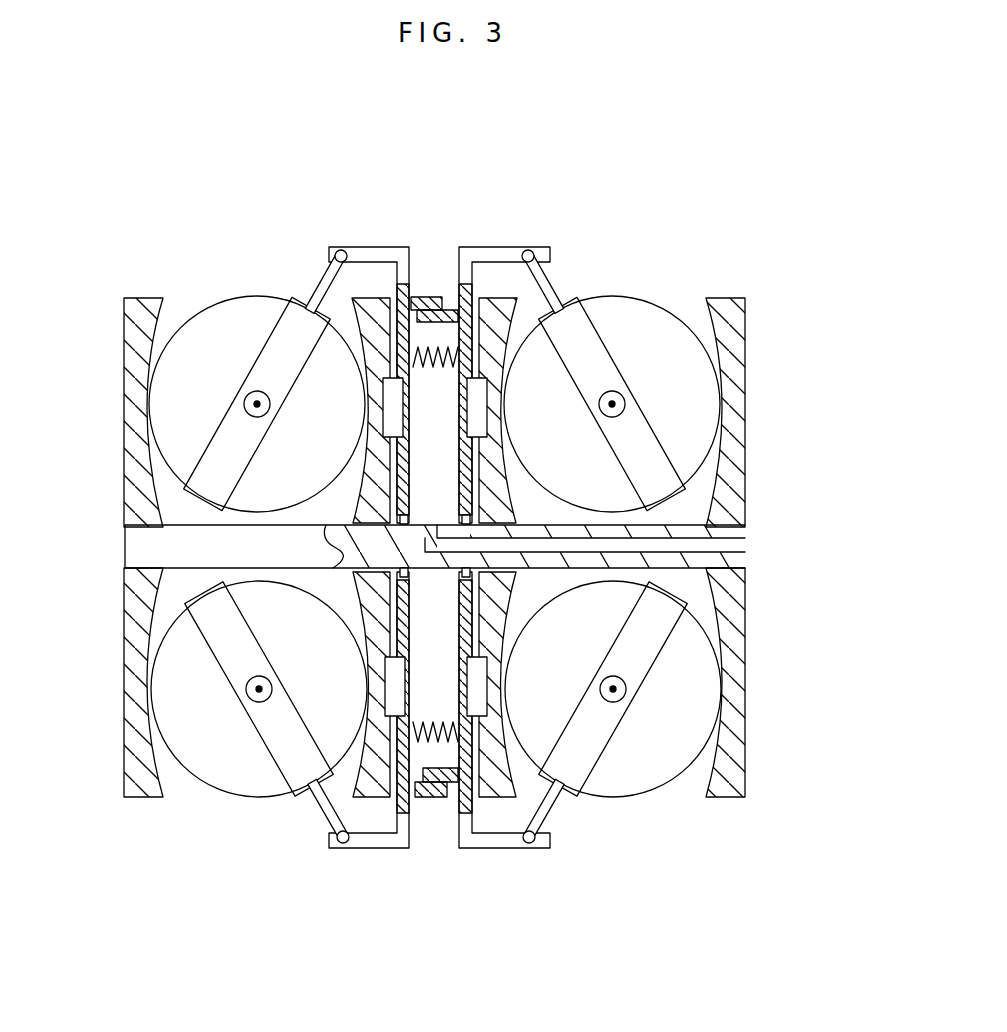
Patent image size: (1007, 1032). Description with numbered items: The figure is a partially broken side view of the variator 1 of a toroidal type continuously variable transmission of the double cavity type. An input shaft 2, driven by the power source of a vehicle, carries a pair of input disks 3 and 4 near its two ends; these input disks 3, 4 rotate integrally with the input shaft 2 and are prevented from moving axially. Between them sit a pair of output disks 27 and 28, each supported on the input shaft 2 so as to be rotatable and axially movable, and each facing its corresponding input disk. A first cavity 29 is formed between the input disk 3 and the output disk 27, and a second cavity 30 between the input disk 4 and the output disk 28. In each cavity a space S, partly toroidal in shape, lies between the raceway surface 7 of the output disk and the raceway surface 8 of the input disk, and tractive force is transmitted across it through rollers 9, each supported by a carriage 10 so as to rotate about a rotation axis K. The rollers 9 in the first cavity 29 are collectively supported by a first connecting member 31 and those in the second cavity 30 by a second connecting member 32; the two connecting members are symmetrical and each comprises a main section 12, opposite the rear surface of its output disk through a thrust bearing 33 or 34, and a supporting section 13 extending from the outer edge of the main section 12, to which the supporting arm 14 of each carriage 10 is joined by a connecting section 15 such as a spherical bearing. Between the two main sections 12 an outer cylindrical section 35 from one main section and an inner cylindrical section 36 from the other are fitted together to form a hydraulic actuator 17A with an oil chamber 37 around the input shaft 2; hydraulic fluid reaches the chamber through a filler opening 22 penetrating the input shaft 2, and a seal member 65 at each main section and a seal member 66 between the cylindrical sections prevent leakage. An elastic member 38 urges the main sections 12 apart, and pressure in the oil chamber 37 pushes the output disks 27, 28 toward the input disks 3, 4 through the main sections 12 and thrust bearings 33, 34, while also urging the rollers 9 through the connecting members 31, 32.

The variator 1 is at (688, 235).
The input shaft 2 is at (178, 575).
The input disk 3 is at (123, 342).
The input disk 4 is at (757, 342).
The raceway surface 7 is at (356, 345).
The raceway surface 8 is at (160, 342).
The roller 9 is at (220, 302).
The carriage 10 is at (256, 356).
The main section 12 is at (447, 265).
The supporting section 13 is at (365, 247).
The supporting arm 14 is at (318, 292).
The connecting section 15 is at (341, 250).
The hydraulic actuator 17A is at (426, 292).
The filler opening 22 is at (727, 546).
The output disk 27 is at (373, 812).
The output disk 28 is at (497, 812).
The first cavity 29 is at (176, 780).
The second cavity 30 is at (700, 776).
The first connecting member 31 is at (333, 853).
The second connecting member 32 is at (542, 853).
The thrust bearing 33 is at (385, 421).
The thrust bearing 34 is at (486, 420).
The outer cylindrical section 35 is at (432, 800).
The inner cylindrical section 36 is at (437, 800).
The oil chamber 37 is at (418, 505).
The elastic member 38 is at (430, 368).
The seal member 65 is at (407, 578).
The seal member 66 is at (443, 800).
The rotation axis K is at (260, 408).
The space S is at (328, 517).